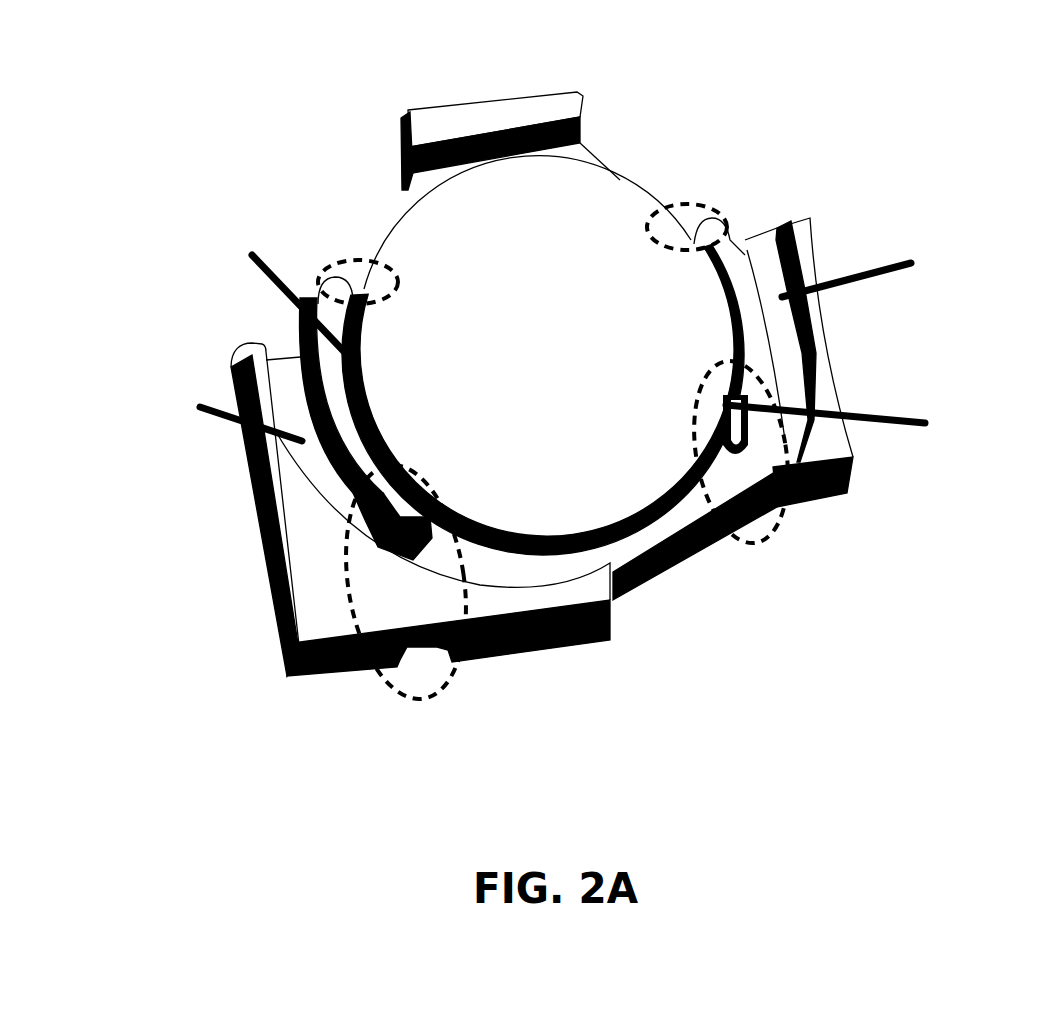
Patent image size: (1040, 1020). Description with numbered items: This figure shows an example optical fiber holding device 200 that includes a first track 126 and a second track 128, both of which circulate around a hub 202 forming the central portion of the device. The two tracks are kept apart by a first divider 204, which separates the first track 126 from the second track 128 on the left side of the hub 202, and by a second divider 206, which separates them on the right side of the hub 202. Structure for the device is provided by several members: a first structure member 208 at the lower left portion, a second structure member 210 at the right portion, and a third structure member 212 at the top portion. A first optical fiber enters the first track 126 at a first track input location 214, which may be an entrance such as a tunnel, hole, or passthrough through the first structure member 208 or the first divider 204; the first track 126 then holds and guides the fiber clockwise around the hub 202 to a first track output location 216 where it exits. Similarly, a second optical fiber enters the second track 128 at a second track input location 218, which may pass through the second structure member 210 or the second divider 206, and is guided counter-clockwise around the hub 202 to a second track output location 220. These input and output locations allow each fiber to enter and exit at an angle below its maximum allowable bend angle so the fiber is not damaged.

The optical fiber holding device 200 is at (300, 98).
The hub 202 is at (608, 245).
The first divider 204 is at (322, 356).
The second divider 206 is at (738, 257).
The first structure member 208 is at (305, 571).
The second structure member 210 is at (832, 369).
The third structure member 212 is at (458, 120).
The first track input location 214 is at (426, 662).
The first track output location 216 is at (352, 272).
The second track input location 218 is at (749, 552).
The second track output location 220 is at (686, 212).
The first track 126 is at (581, 300).
The second track 128 is at (564, 417).